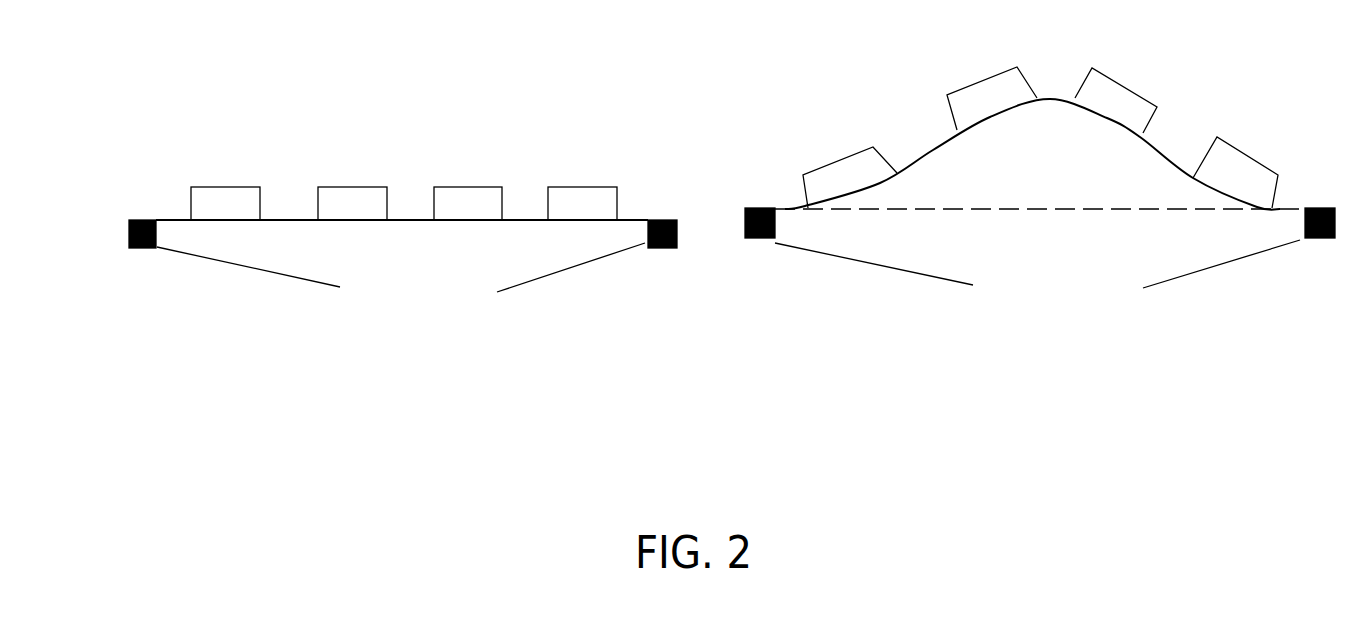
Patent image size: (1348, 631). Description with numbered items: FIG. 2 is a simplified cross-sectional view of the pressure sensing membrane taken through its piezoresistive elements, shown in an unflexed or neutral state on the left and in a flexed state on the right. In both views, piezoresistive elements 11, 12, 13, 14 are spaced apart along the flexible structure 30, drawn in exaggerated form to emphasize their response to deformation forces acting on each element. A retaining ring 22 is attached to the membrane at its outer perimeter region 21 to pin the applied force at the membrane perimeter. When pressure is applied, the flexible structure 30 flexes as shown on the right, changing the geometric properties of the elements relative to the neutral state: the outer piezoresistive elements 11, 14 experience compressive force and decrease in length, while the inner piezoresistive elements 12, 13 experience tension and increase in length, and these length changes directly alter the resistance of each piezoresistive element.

The piezoresistive element 11 is at (227, 220).
The piezoresistive element 12 is at (352, 220).
The piezoresistive element 13 is at (468, 220).
The piezoresistive element 14 is at (557, 220).
The outer perimeter region 21 is at (150, 220).
The retaining ring 22 is at (141, 248).
The flexible structure 30 is at (412, 220).